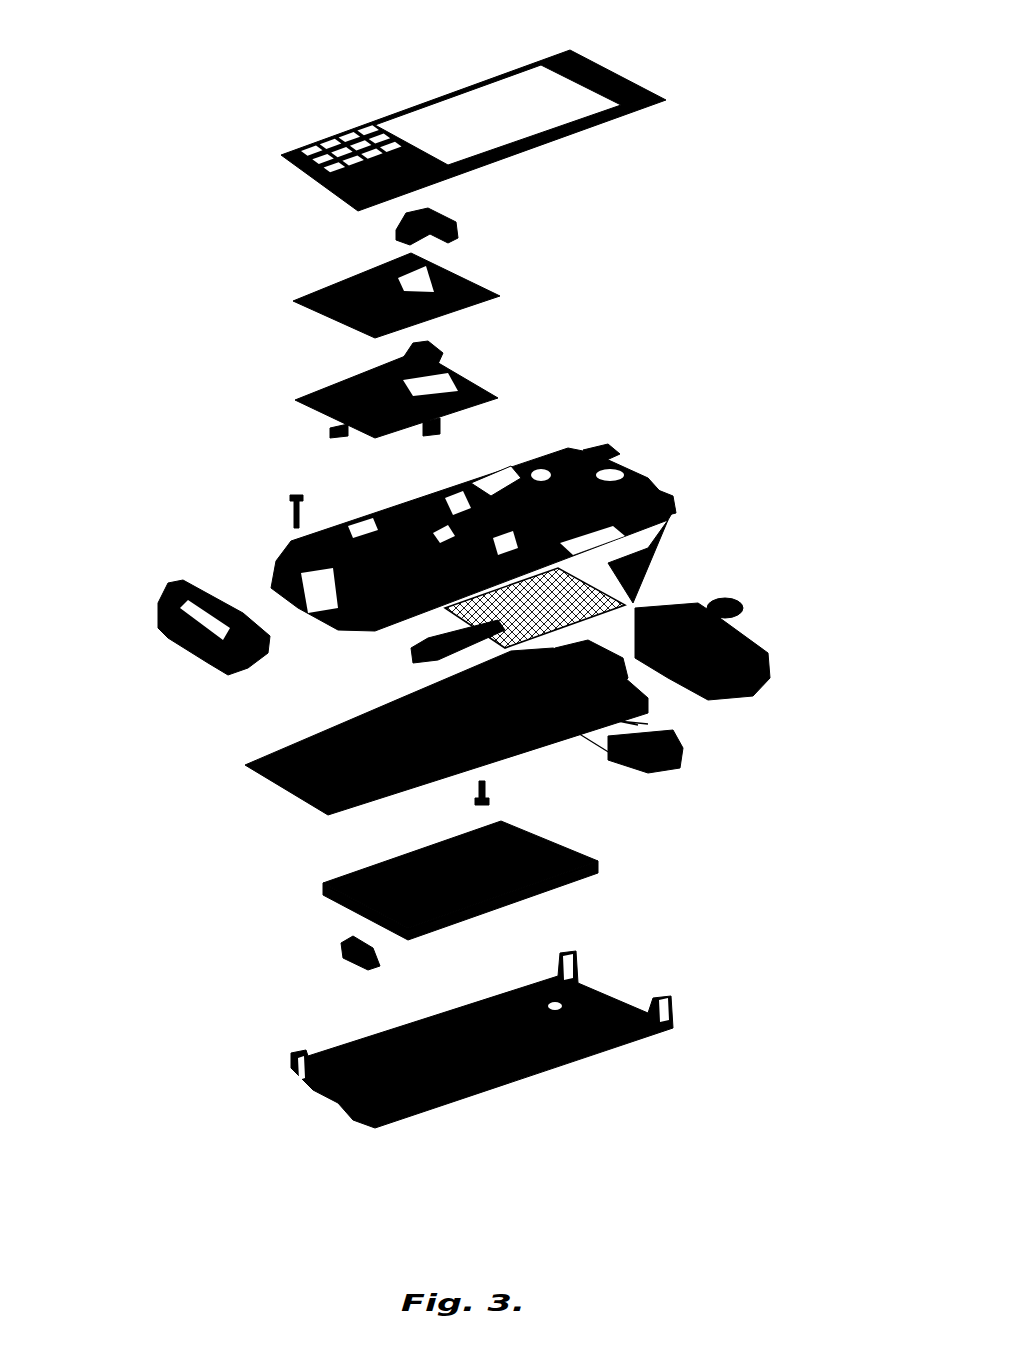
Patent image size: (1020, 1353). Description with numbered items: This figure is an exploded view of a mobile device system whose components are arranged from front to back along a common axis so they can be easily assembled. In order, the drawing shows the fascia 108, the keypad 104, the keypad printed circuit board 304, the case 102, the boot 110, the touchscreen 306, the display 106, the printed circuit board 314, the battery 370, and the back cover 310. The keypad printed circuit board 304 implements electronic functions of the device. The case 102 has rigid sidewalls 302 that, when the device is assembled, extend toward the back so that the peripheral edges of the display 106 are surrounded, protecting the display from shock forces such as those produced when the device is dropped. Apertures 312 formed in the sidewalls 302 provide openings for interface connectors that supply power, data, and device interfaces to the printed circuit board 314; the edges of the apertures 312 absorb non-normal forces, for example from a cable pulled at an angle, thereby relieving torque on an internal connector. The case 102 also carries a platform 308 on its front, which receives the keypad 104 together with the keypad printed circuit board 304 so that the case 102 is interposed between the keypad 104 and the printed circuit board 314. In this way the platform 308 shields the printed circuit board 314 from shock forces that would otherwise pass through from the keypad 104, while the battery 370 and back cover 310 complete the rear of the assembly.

The fascia 108 is at (680, 87).
The keypad 104 is at (502, 283).
The keypad printed circuit board 304 is at (504, 382).
The apertures 312 is at (492, 471).
The sidewalls 302 is at (598, 436).
The case 102 is at (642, 450).
The touchscreen 306 is at (622, 586).
The display 106 is at (538, 608).
The platform 308 is at (322, 517).
The boot 110 is at (156, 652).
The printed circuit board 314 is at (430, 772).
The battery 370 is at (598, 848).
The back cover 310 is at (692, 1002).